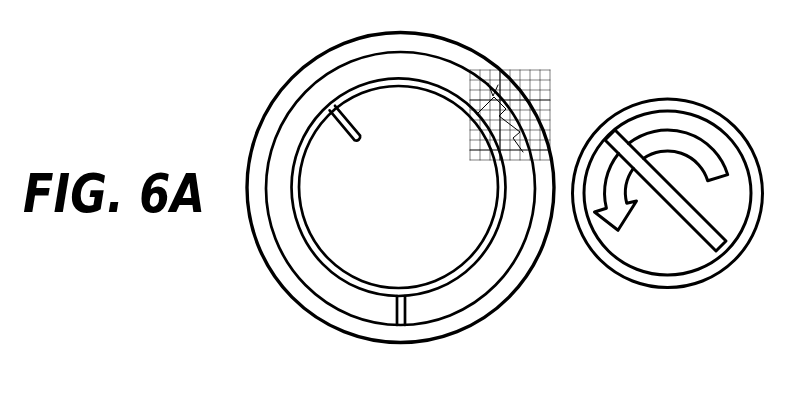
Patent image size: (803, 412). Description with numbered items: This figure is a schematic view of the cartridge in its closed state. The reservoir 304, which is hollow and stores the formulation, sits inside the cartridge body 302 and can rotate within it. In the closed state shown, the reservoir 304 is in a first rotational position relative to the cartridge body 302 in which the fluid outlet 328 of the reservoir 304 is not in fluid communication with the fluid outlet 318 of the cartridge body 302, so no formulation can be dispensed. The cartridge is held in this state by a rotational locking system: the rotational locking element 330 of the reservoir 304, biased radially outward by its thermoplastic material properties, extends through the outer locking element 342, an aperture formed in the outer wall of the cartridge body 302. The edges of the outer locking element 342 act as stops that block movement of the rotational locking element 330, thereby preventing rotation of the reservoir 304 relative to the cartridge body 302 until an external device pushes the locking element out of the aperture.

The cartridge body 302 is at (316, 61).
The reservoir 304 is at (322, 261).
The fluid outlet 318 is at (400, 318).
The fluid outlet 328 is at (335, 128).
The rotational locking element 330 is at (513, 112).
The outer locking element 342 is at (486, 84).